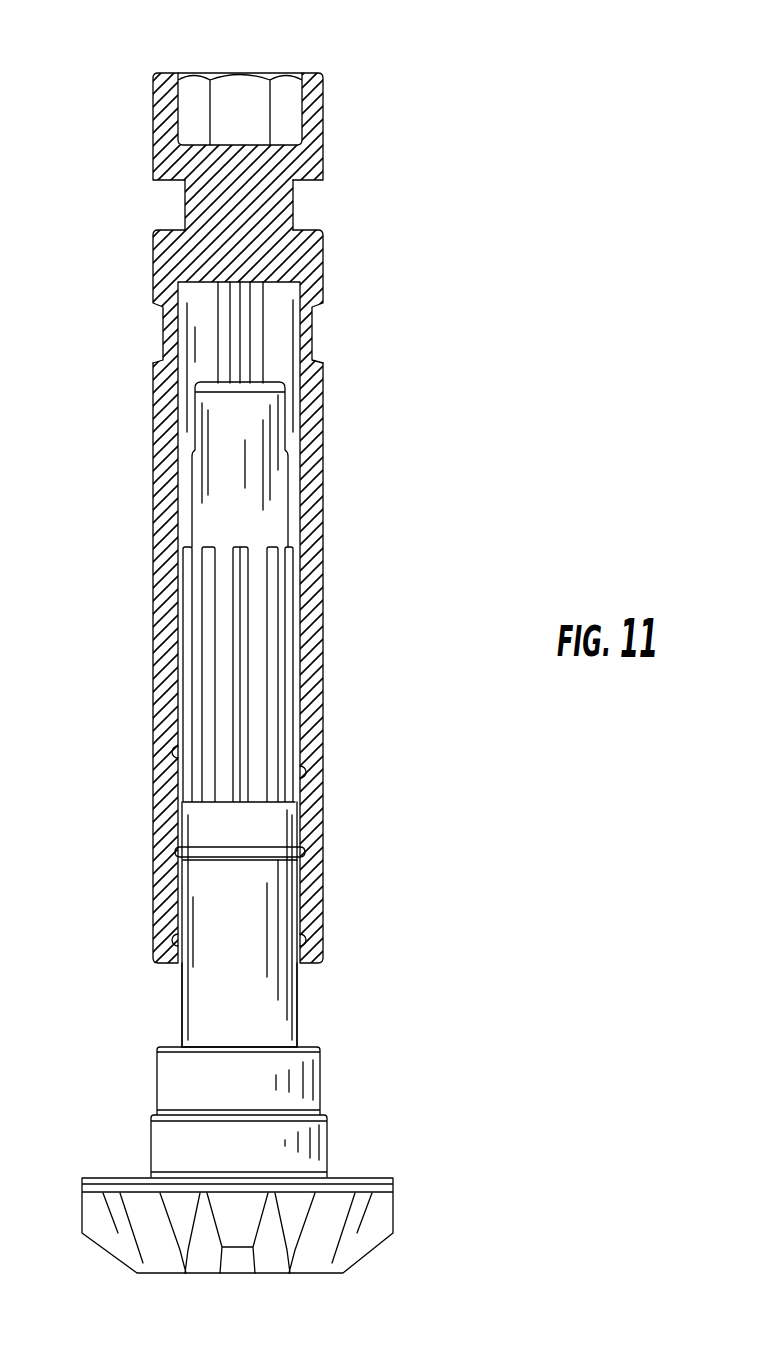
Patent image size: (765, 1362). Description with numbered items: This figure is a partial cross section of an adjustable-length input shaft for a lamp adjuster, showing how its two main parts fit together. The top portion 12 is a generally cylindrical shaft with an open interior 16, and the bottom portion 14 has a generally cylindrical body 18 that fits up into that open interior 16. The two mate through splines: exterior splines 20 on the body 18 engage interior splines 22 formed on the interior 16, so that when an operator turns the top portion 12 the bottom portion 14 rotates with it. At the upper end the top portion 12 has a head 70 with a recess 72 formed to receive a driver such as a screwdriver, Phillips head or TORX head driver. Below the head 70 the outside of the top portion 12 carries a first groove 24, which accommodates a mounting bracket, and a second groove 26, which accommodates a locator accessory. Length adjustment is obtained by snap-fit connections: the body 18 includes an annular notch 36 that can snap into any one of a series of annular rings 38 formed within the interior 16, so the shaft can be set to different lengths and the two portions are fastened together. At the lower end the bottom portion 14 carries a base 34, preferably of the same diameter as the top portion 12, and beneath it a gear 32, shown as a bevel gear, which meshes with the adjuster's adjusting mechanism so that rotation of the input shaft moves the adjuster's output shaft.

The top portion 12 is at (316, 676).
The bottom portion 14 is at (262, 1001).
The open interior 16 is at (205, 339).
The body 18 is at (262, 497).
The exterior splines 20 is at (187, 668).
The interior splines 22 is at (246, 357).
The first groove 24 is at (318, 334).
The second groove 26 is at (305, 187).
The gear 32 is at (387, 1218).
The base 34 is at (290, 1152).
The annular notch 36 is at (263, 843).
The annular ring 38 is at (166, 753).
The head 70 is at (325, 127).
The recess 72 is at (232, 103).